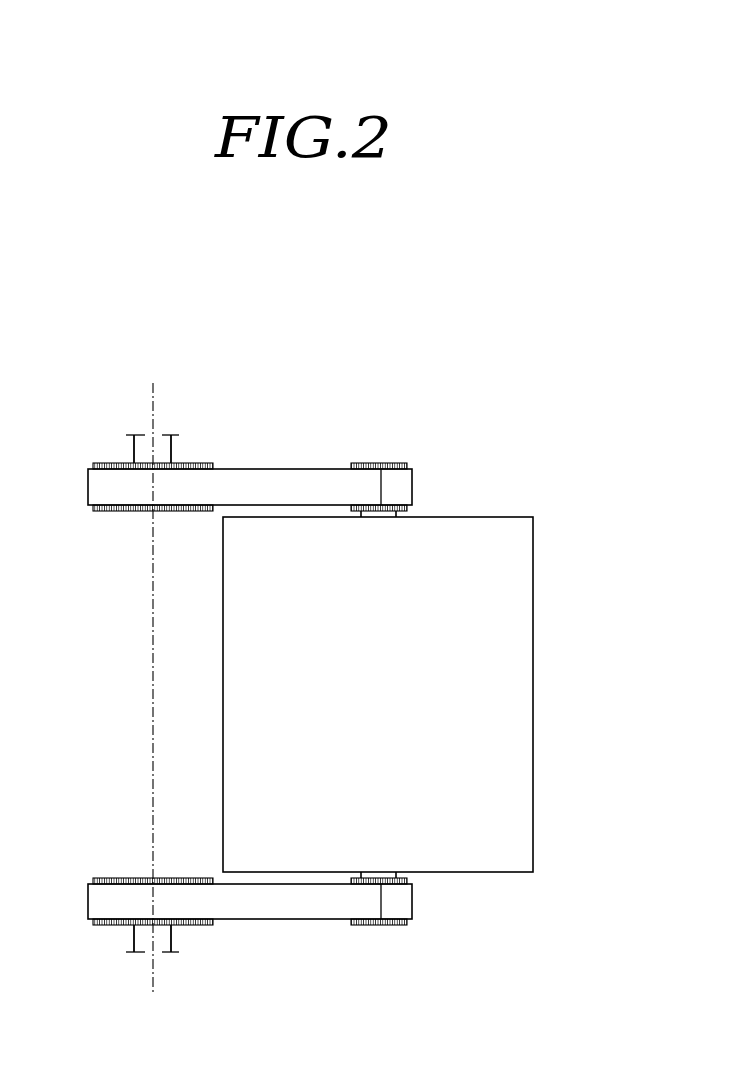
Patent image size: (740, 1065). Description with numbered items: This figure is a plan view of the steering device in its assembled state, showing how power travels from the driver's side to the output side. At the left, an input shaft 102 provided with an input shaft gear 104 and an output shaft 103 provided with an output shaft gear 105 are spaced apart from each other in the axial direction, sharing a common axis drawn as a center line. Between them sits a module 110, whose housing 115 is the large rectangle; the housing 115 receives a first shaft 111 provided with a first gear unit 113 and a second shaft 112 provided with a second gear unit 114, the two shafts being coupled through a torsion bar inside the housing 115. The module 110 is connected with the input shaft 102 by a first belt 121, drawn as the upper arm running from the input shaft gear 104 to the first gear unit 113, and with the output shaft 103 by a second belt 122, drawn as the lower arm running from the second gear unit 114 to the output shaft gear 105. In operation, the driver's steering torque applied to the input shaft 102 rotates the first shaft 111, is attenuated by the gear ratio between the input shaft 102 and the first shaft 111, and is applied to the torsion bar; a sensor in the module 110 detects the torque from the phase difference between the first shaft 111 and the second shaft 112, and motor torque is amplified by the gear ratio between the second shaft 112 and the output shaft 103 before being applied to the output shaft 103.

The input shaft 102 is at (141, 434).
The output shaft 103 is at (141, 953).
The input shaft gear 104 is at (105, 463).
The output shaft gear 105 is at (105, 926).
The module 110 is at (568, 634).
The first shaft 111 is at (392, 510).
The second shaft 112 is at (388, 875).
The first gear unit 113 is at (370, 466).
The second gear unit 114 is at (368, 927).
The housing 115 is at (527, 540).
The first belt 121 is at (285, 478).
The second belt 122 is at (268, 909).